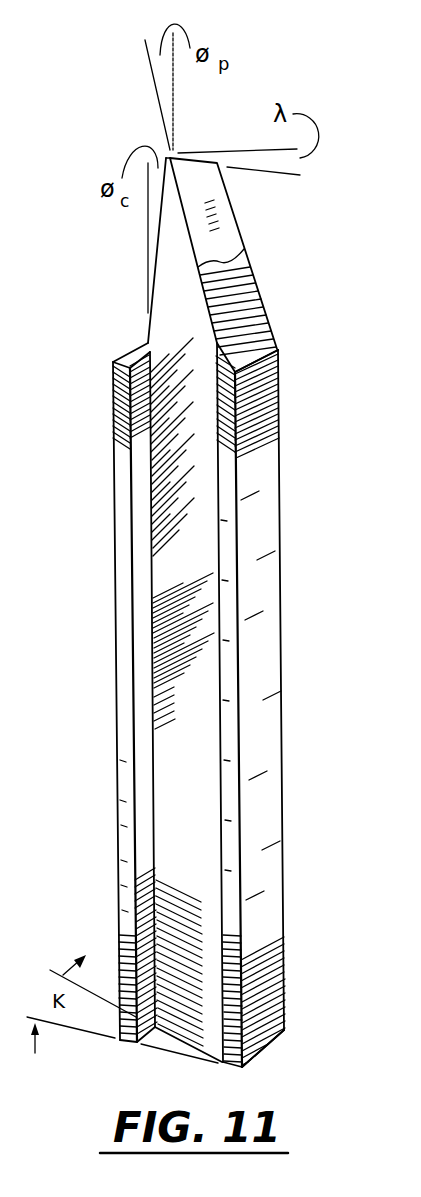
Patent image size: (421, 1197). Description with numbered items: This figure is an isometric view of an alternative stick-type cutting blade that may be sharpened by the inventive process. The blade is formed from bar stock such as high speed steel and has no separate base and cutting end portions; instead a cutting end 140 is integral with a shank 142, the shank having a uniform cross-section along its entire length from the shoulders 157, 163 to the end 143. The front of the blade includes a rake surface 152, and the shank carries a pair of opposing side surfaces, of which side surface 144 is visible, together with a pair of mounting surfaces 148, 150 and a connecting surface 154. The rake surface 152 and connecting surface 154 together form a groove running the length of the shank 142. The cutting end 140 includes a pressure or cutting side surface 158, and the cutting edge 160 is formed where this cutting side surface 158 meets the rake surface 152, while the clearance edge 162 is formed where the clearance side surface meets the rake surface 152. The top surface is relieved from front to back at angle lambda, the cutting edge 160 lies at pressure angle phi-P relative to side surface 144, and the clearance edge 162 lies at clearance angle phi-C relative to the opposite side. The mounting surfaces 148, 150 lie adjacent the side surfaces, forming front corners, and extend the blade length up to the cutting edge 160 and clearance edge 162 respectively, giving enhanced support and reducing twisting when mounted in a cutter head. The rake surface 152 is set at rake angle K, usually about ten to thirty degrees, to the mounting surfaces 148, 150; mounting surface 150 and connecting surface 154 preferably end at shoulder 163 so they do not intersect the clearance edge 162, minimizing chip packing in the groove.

The cutting end 140 is at (254, 274).
The shank 142 is at (286, 717).
The end 143 is at (268, 1060).
The side surface 144 is at (255, 663).
The mounting surface 148 is at (227, 520).
The mounting surface 150 is at (127, 805).
The rake surface 152 is at (183, 482).
The connecting surface 154 is at (143, 642).
The shoulder 157 is at (263, 343).
The cutting side surface 158 is at (242, 297).
The cutting edge 160 is at (240, 247).
The clearance edge 162 is at (161, 160).
The shoulder 163 is at (140, 347).